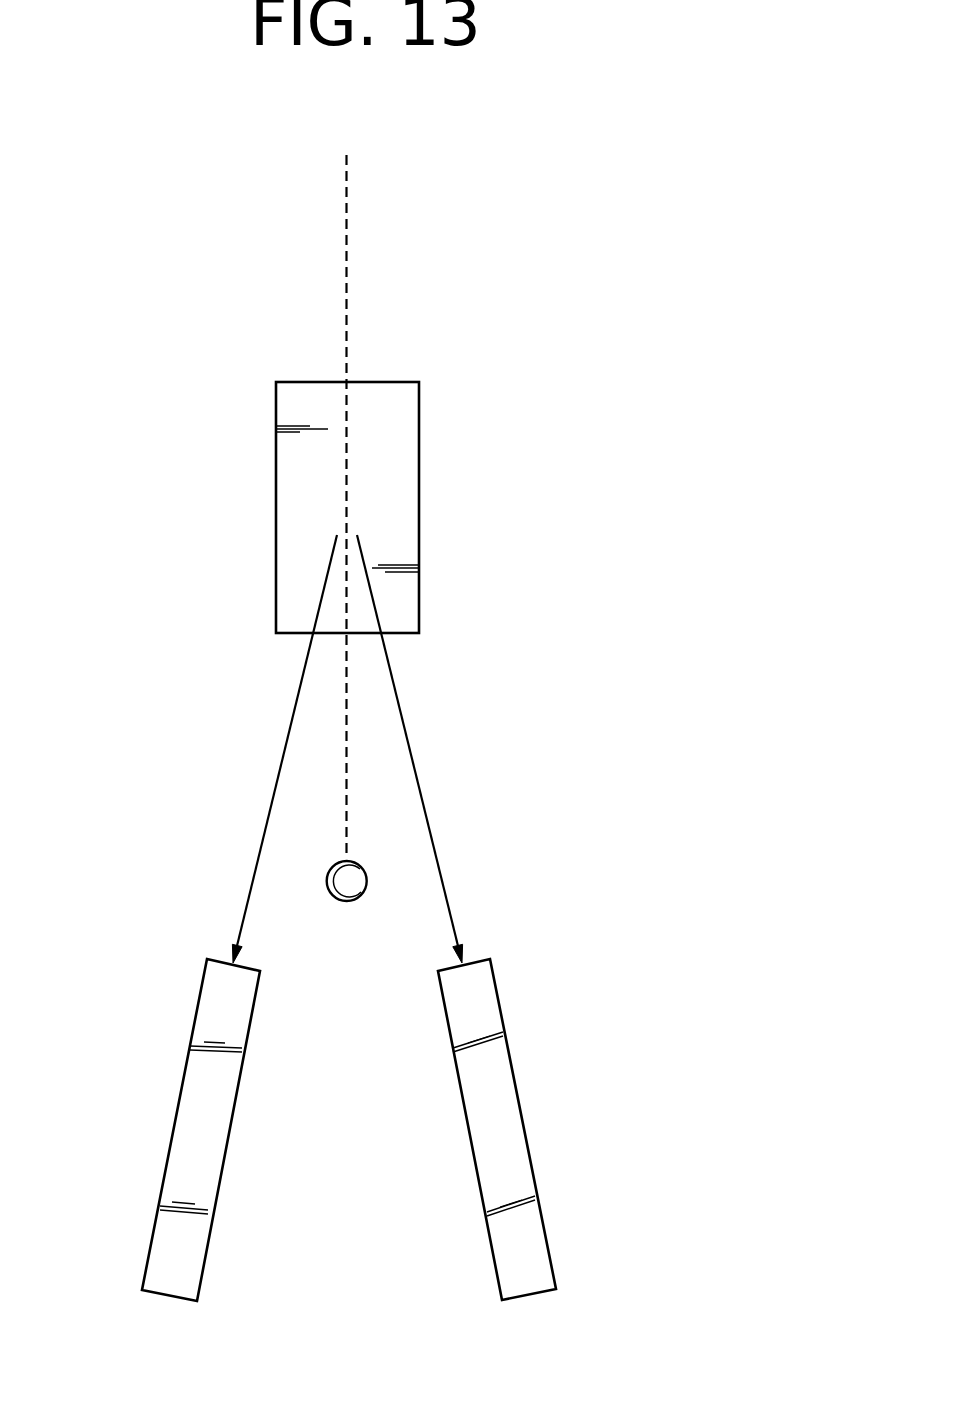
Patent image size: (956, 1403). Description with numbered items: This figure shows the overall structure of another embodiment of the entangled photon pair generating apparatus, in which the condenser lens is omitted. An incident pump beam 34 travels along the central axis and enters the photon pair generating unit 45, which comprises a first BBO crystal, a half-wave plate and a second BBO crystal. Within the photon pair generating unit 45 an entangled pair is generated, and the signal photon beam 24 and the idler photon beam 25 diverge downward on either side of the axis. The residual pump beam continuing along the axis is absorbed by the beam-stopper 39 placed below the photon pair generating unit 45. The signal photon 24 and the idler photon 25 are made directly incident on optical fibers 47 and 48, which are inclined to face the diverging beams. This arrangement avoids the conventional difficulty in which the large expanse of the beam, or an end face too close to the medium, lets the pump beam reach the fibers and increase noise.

The incident pump beam 34 is at (348, 224).
The photon pair generating unit 45 is at (403, 442).
The signal photon beam 24 is at (285, 748).
The idler photon beam 25 is at (413, 742).
The beam-stopper 39 is at (367, 879).
The optical fiber 47 is at (190, 1125).
The optical fiber 48 is at (502, 1123).